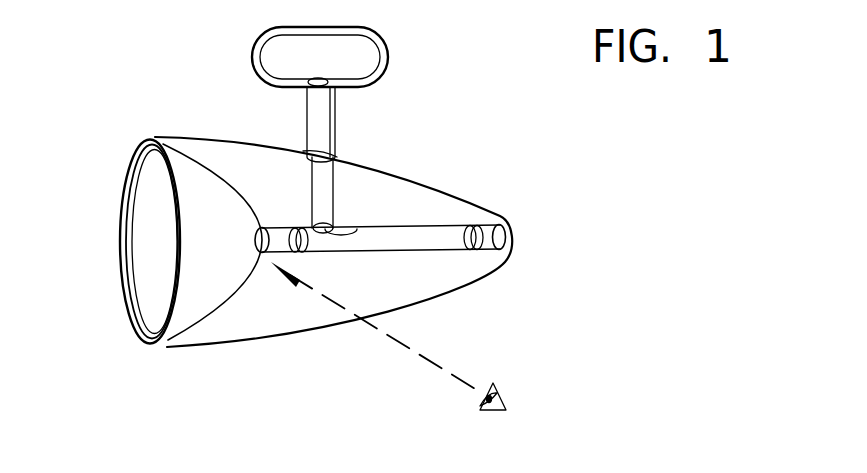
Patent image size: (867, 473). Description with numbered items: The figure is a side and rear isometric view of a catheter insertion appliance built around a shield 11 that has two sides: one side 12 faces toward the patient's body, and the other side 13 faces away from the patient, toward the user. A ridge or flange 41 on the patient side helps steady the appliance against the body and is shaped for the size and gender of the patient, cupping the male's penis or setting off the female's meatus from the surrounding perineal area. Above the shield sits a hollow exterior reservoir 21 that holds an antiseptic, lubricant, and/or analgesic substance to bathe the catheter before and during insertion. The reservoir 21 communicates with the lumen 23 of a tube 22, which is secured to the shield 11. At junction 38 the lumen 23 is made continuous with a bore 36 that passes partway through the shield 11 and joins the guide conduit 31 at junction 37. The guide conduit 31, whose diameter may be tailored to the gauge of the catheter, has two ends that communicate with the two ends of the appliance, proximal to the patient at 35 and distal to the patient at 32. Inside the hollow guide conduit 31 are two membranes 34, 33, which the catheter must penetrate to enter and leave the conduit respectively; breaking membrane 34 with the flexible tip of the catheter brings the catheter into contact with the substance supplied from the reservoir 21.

The shield 11 is at (532, 158).
The side facing the patient's body 12 is at (149, 286).
The side facing away from the patient's body 13 is at (435, 192).
The flange 41 is at (177, 146).
The exterior reservoir 21 is at (350, 52).
The tube 22 is at (305, 104).
The lumen 23 is at (326, 128).
The junction 38 is at (303, 150).
The bore 36 is at (328, 188).
The junction 37 is at (350, 234).
The guide conduit 31 is at (408, 255).
The proximal end 35 is at (258, 236).
The membrane 33 is at (293, 228).
The membrane 34 is at (488, 226).
The distal end 32 is at (512, 238).